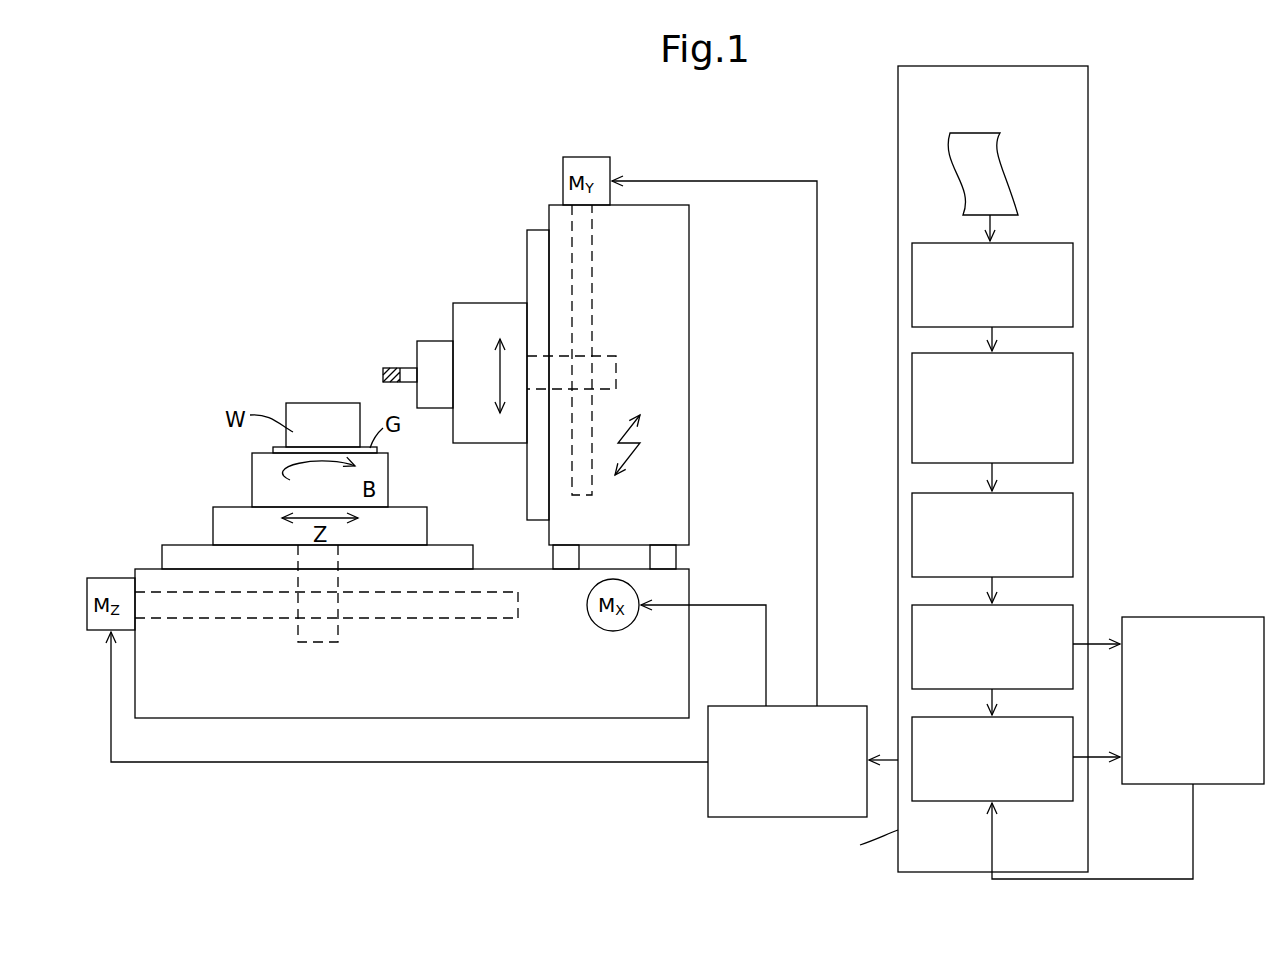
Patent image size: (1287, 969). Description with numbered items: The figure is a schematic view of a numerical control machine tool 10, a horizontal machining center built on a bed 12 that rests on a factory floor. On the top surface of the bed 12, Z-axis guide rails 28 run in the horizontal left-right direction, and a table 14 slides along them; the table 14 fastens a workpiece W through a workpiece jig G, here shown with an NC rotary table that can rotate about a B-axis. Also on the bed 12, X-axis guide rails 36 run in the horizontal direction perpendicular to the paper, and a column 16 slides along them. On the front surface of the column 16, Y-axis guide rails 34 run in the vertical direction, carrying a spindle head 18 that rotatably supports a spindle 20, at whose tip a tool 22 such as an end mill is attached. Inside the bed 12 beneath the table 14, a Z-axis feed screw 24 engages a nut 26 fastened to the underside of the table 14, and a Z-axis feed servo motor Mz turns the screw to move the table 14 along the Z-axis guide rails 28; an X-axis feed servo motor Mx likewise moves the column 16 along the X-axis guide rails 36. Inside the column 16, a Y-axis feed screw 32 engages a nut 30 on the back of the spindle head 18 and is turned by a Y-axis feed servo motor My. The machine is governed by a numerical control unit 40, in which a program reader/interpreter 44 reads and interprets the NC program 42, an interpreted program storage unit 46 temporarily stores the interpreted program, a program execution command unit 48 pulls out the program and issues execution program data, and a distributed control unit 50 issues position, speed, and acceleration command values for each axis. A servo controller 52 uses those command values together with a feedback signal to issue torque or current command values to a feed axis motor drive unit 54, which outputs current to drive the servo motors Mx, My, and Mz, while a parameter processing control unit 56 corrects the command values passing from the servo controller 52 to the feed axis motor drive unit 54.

The numerical control machine tool 10 is at (333, 270).
The bed 12 is at (415, 700).
The table 14 is at (220, 530).
The column 16 is at (673, 285).
The spindle head 18 is at (487, 303).
The spindle 20 is at (433, 341).
The tool 22 is at (390, 368).
The Z-axis feed screw 24 is at (225, 618).
The nut 26 is at (340, 632).
The Z-axis guide rails 28 is at (168, 560).
The nut 30 is at (600, 356).
The Y-axis feed screw 32 is at (592, 250).
The Y-axis guide rails 34 is at (527, 238).
The X-axis guide rails 36 is at (568, 557).
The numerical control unit 40 is at (898, 118).
The NC program 42 is at (1010, 163).
The program reader/interpreter 44 is at (1073, 268).
The interpreted program storage unit 46 is at (1073, 375).
The program execution command unit 48 is at (1073, 525).
The distributed control unit 50 is at (1073, 618).
The servo controller 52 is at (1073, 770).
The feed axis motor drive unit 54 is at (708, 797).
The parameter processing control unit 56 is at (1190, 617).